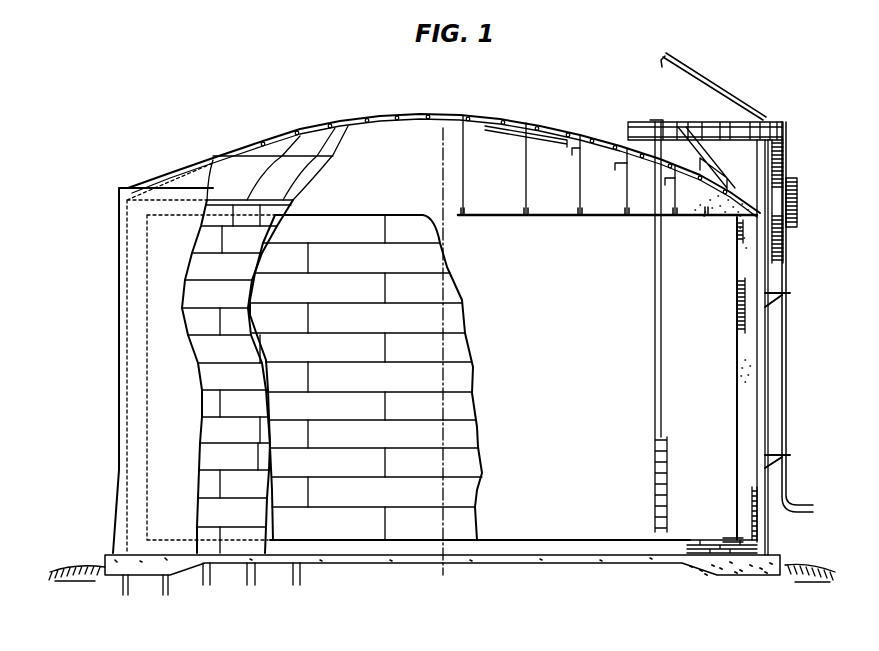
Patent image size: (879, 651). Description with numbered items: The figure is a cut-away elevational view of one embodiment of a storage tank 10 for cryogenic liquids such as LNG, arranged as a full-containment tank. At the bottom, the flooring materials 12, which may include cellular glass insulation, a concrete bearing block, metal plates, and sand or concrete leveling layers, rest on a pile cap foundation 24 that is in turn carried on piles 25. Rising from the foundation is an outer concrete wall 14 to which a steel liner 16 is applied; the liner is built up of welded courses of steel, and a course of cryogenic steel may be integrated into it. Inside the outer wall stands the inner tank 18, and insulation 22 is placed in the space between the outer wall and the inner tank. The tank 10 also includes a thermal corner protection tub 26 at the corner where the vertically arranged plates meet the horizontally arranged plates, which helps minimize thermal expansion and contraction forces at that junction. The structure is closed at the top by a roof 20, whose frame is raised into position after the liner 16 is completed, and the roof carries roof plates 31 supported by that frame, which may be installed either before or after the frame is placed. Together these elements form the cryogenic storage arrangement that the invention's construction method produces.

The storage tank 10 is at (108, 244).
The flooring materials 12 is at (652, 545).
The outer concrete wall 14 is at (108, 369).
The steel liner 16 is at (235, 242).
The inner tank 18 is at (458, 408).
The roof 20 is at (294, 118).
The insulation 22 is at (747, 317).
The pile cap foundation 24 is at (738, 570).
The piles 25 is at (128, 585).
The thermal corner protection tub 26 is at (753, 488).
The roof plates 31 is at (257, 167).